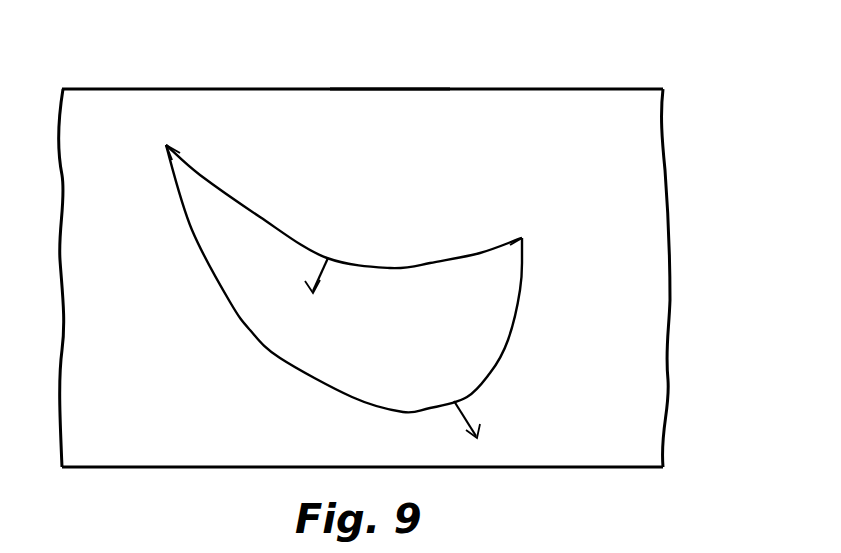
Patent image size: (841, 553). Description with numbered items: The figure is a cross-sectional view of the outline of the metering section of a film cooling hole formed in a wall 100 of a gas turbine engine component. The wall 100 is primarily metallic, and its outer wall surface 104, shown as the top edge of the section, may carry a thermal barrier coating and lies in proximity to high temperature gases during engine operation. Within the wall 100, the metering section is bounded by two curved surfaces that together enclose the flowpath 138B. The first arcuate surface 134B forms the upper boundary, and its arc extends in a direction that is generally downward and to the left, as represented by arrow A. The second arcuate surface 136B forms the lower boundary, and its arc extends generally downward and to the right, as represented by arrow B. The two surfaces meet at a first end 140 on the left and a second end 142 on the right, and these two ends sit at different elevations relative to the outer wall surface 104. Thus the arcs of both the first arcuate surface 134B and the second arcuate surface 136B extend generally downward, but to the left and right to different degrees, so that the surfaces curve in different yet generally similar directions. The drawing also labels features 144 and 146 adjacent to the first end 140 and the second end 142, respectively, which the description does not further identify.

The wall 100 is at (612, 170).
The outer wall surface 104 is at (395, 89).
The first arcuate surface 134B is at (335, 260).
The second arcuate surface 136B is at (352, 397).
The flowpath 138B is at (370, 321).
The first end 140 is at (173, 150).
The second end 142 is at (517, 238).
The first corner 144 is at (168, 152).
The second corner 146 is at (525, 242).
The arrow A is at (324, 263).
The arrow B is at (463, 410).